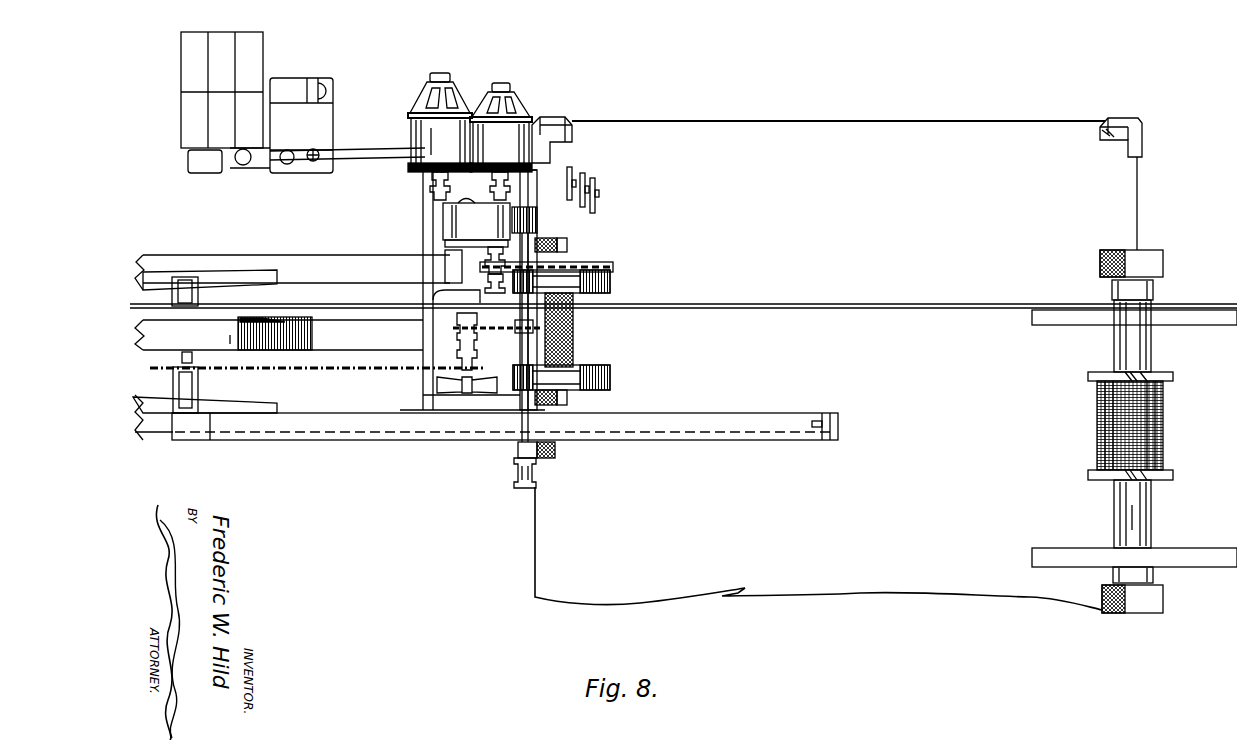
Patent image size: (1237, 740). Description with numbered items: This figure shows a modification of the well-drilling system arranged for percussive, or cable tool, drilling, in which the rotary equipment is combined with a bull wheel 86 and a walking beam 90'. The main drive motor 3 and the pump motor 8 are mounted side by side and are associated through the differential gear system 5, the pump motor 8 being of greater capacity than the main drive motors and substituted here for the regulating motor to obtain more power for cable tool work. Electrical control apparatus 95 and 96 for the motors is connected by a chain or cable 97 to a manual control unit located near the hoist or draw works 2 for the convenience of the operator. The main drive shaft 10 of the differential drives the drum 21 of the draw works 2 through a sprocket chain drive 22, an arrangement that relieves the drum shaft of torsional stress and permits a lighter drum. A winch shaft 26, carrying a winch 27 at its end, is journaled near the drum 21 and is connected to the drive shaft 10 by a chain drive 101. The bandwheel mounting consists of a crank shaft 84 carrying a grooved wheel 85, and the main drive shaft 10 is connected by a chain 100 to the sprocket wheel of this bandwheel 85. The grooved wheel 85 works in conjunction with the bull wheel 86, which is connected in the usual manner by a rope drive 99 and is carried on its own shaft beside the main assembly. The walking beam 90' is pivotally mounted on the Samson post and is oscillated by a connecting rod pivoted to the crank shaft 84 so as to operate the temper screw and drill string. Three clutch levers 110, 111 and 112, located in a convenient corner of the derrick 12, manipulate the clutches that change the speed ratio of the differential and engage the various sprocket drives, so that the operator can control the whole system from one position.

The electrical control apparatus 95 is at (253, 54).
The electrical control apparatus 96 is at (318, 86).
The chain or cable 97 is at (343, 143).
The pump motor 8 is at (418, 132).
The main drive motor 3 is at (525, 128).
The clutch lever 110 is at (572, 176).
The clutch lever 111 is at (586, 182).
The clutch lever 112 is at (597, 196).
The rope drive 99 is at (801, 306).
The differential gear system 5 is at (438, 218).
The sprocket chain drive 22 is at (573, 262).
The hoist or draw works 2 is at (605, 272).
The drum 21 is at (577, 337).
The winch shaft 26 is at (523, 353).
The grooved wheel 85 is at (265, 322).
The crank shaft 84 is at (304, 372).
The chain 100 is at (342, 373).
The chain drive 101 is at (455, 329).
The main drive shaft 10 is at (455, 338).
The walking beam 90' is at (505, 444).
The winch 27 is at (508, 469).
The derrick 12 is at (792, 583).
The bull wheel 86 is at (1195, 322).